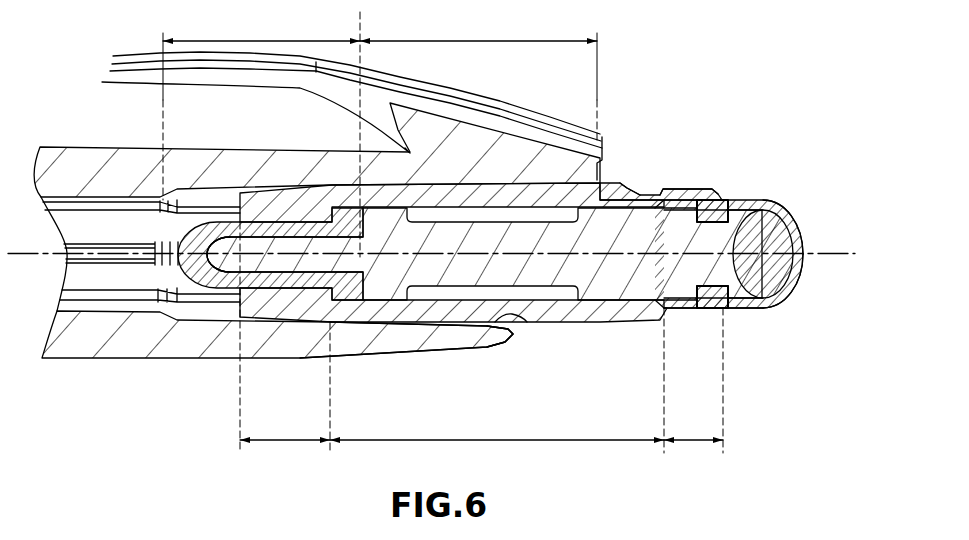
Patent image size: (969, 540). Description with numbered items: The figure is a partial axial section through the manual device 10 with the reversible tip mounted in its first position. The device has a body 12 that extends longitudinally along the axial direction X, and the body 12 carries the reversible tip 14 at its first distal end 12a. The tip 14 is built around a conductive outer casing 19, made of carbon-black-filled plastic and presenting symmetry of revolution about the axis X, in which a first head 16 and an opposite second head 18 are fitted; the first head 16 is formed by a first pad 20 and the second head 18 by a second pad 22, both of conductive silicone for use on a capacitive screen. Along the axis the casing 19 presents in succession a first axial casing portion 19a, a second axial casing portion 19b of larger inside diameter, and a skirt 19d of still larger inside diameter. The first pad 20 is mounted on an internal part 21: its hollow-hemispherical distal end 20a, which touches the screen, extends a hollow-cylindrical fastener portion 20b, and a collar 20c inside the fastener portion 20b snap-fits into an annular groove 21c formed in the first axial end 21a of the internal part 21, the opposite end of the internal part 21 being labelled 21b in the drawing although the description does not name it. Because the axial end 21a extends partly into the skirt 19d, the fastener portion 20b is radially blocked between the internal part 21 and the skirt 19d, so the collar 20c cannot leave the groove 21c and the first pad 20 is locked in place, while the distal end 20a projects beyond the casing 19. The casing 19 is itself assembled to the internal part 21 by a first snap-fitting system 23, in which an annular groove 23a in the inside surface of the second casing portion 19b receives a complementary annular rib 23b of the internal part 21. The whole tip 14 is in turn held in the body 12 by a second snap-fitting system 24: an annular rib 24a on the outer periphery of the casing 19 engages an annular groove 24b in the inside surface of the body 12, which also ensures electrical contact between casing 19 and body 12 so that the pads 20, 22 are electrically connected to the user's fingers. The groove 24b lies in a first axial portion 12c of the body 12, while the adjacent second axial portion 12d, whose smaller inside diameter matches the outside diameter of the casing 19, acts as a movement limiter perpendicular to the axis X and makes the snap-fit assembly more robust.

The manual device 10 is at (180, 407).
The body 12 is at (118, 350).
The first distal end 12a is at (395, 348).
The first axial portion 12c is at (478, 77).
The second axial portion 12d is at (261, 134).
The reversible tip 14 is at (620, 126).
The first head 16 is at (782, 310).
The second head 18 is at (178, 273).
The conductive outer casing 19 is at (602, 318).
The first axial casing portion 19a is at (285, 337).
The second axial casing portion 19b is at (497, 380).
The skirt 19d is at (693, 380).
The first pad 20 is at (796, 216).
The distal end 20a is at (803, 272).
The fastener portion 20b is at (757, 310).
The collar 20c is at (702, 308).
The internal part 21 is at (471, 232).
The first axial end 21a is at (739, 262).
The core rear end 21b is at (212, 275).
The annular groove 21c is at (718, 287).
The second pad 22 is at (181, 225).
The snap-fitting system 23 is at (700, 133).
The annular groove 23a is at (624, 187).
The annular rib 23b is at (645, 188).
The snap-fitting system 24 is at (557, 383).
The annular rib 24a is at (519, 320).
The annular groove 24b is at (494, 328).
The axial direction X is at (432, 240).